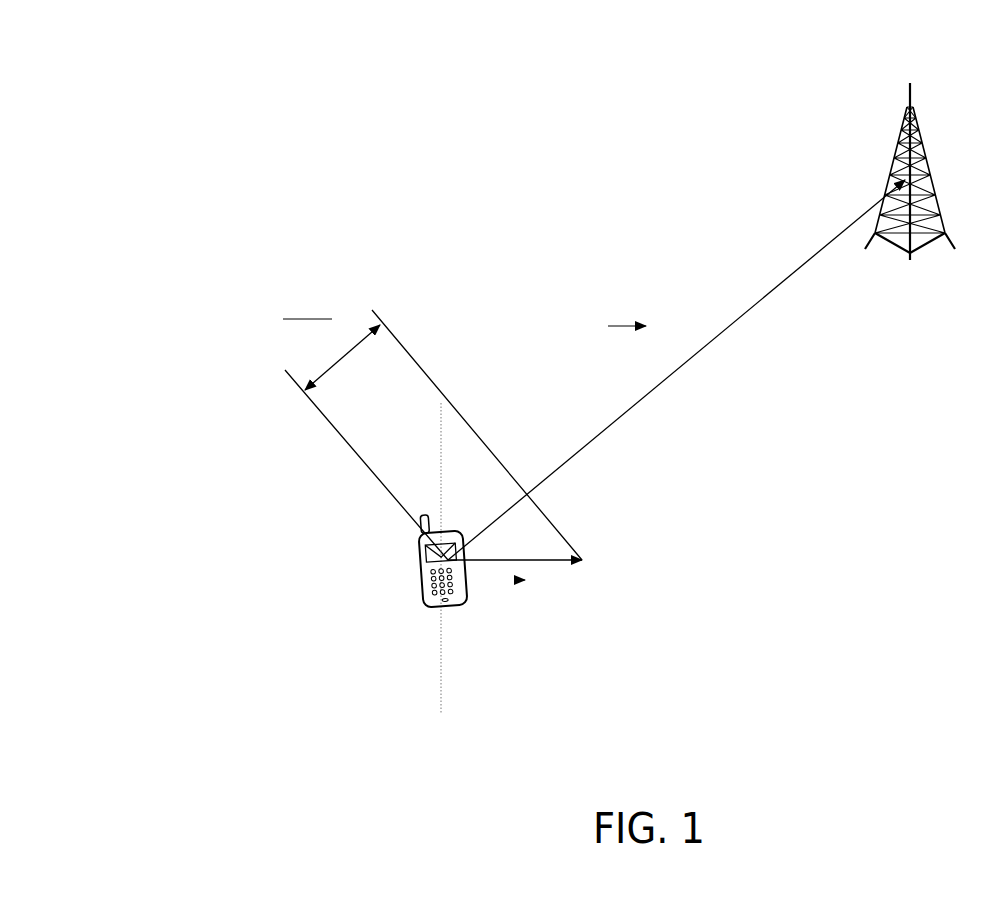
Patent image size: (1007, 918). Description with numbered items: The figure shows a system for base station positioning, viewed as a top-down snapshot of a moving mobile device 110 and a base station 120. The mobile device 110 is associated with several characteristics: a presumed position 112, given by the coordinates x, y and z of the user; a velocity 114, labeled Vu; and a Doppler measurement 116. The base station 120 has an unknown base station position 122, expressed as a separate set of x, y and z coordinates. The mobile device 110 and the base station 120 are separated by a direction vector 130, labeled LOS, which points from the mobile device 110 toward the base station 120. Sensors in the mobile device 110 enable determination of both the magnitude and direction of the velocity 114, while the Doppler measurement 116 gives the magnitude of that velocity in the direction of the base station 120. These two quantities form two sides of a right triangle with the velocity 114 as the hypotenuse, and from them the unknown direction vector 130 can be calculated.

The mobile device 110 is at (378, 560).
The position 112 is at (364, 576).
The velocity 114 is at (540, 603).
The Doppler measurement 116 is at (351, 420).
The base station 120 is at (845, 171).
The base station position 122 is at (839, 48).
The direction vector 130 is at (676, 370).